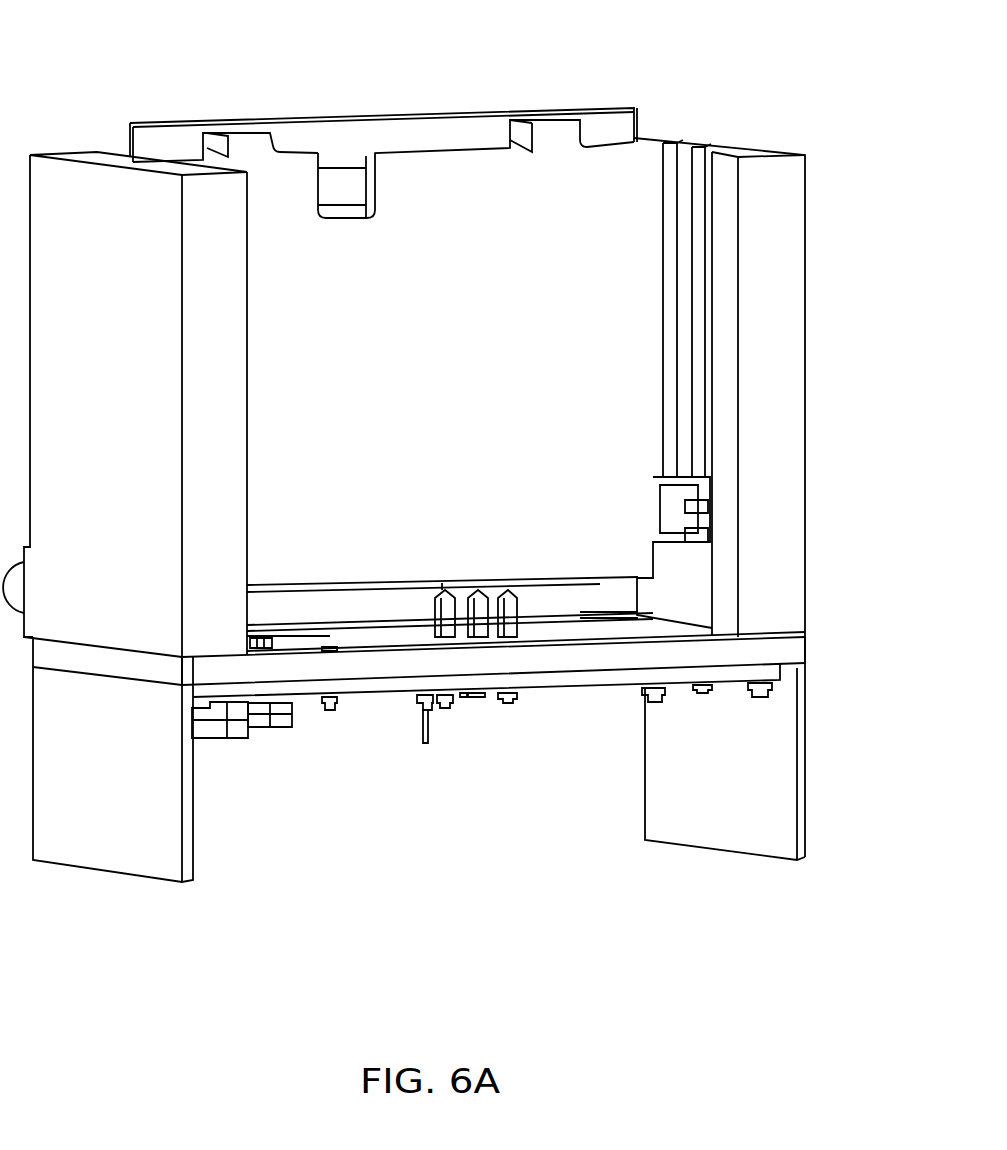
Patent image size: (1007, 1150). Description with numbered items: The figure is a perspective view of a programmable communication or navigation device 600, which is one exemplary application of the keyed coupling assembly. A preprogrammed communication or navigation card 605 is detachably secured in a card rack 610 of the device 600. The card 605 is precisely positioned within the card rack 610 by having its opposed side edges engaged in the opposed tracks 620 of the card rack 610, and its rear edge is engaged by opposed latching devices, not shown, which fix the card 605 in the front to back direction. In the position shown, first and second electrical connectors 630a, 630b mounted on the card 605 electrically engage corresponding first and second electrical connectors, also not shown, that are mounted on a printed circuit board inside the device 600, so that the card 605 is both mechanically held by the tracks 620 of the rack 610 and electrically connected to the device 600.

The communication or navigation device 600 is at (774, 80).
The communication or navigation card 605 is at (455, 354).
The card rack 610 is at (104, 146).
The opposed tracks 620 is at (745, 152).
The first electrical connector 630a is at (385, 608).
The second electrical connector 630b is at (593, 602).